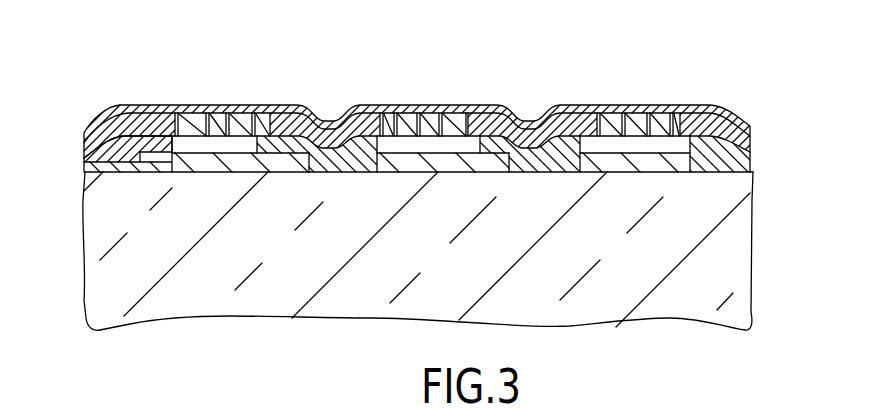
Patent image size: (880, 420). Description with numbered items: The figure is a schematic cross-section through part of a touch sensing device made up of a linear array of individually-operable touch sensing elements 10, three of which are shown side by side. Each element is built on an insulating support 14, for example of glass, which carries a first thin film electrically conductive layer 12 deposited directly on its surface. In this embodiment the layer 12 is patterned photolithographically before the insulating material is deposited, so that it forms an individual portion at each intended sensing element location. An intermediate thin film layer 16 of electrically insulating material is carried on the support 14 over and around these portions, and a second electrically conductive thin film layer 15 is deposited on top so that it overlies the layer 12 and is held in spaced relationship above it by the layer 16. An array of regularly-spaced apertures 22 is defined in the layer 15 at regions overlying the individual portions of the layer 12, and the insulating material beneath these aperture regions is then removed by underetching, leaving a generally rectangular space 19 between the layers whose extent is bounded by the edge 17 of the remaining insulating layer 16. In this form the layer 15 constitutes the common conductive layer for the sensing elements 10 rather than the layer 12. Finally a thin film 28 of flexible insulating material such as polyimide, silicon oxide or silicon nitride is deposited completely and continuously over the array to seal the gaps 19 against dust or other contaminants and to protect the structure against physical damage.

The touch sensing element 10 is at (140, 80).
The first thin film electrically conductive layer 12 is at (168, 175).
The insulating support 14 is at (728, 238).
The second electrically conductive thin film layer 15 is at (735, 110).
The intermediate thin film insulating layer 16 is at (108, 162).
The edge of insulating layer 17 is at (296, 112).
The space 19 is at (271, 126).
The apertures 22 is at (245, 107).
The sealing thin film 28 is at (104, 111).